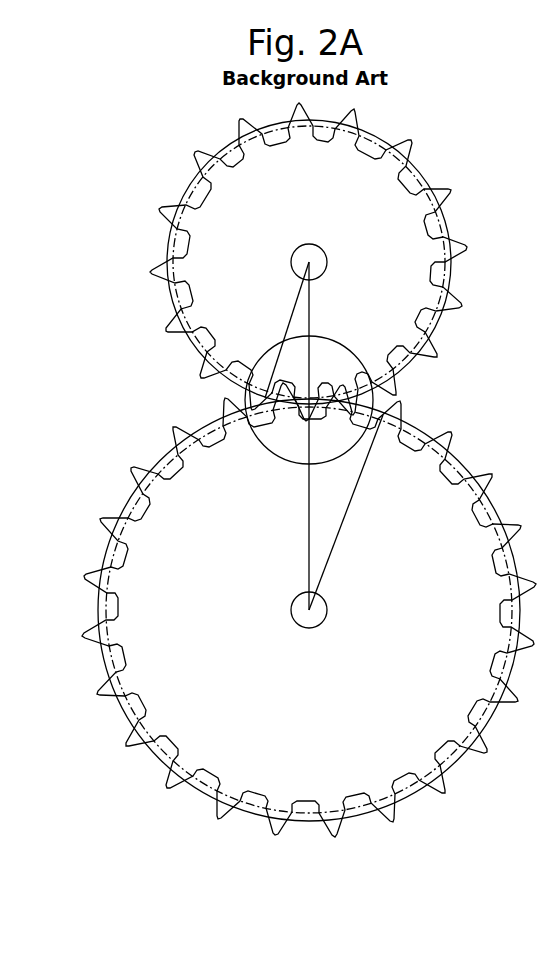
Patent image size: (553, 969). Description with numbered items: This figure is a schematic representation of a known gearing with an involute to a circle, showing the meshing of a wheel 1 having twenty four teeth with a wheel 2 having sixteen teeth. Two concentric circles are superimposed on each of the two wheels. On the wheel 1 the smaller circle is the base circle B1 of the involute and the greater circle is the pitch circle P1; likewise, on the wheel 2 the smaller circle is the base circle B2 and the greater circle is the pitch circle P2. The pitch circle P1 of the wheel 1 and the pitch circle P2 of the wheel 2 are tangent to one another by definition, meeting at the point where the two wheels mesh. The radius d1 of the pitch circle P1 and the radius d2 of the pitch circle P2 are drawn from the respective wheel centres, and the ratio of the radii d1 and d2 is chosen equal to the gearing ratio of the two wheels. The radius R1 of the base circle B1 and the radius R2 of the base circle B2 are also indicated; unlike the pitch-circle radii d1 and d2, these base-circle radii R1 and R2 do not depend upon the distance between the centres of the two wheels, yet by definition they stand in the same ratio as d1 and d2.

The wheel 1 is at (294, 610).
The wheel 2 is at (294, 262).
The pitch circle P1 is at (127, 503).
The pitch circle P2 is at (188, 183).
The base circle B1 is at (118, 585).
The base circle B2 is at (210, 178).
The radius of base circle R1 is at (346, 512).
The radius of base circle R2 is at (281, 330).
The radius of pitch circle d1 is at (292, 506).
The radius of pitch circle d2 is at (331, 332).